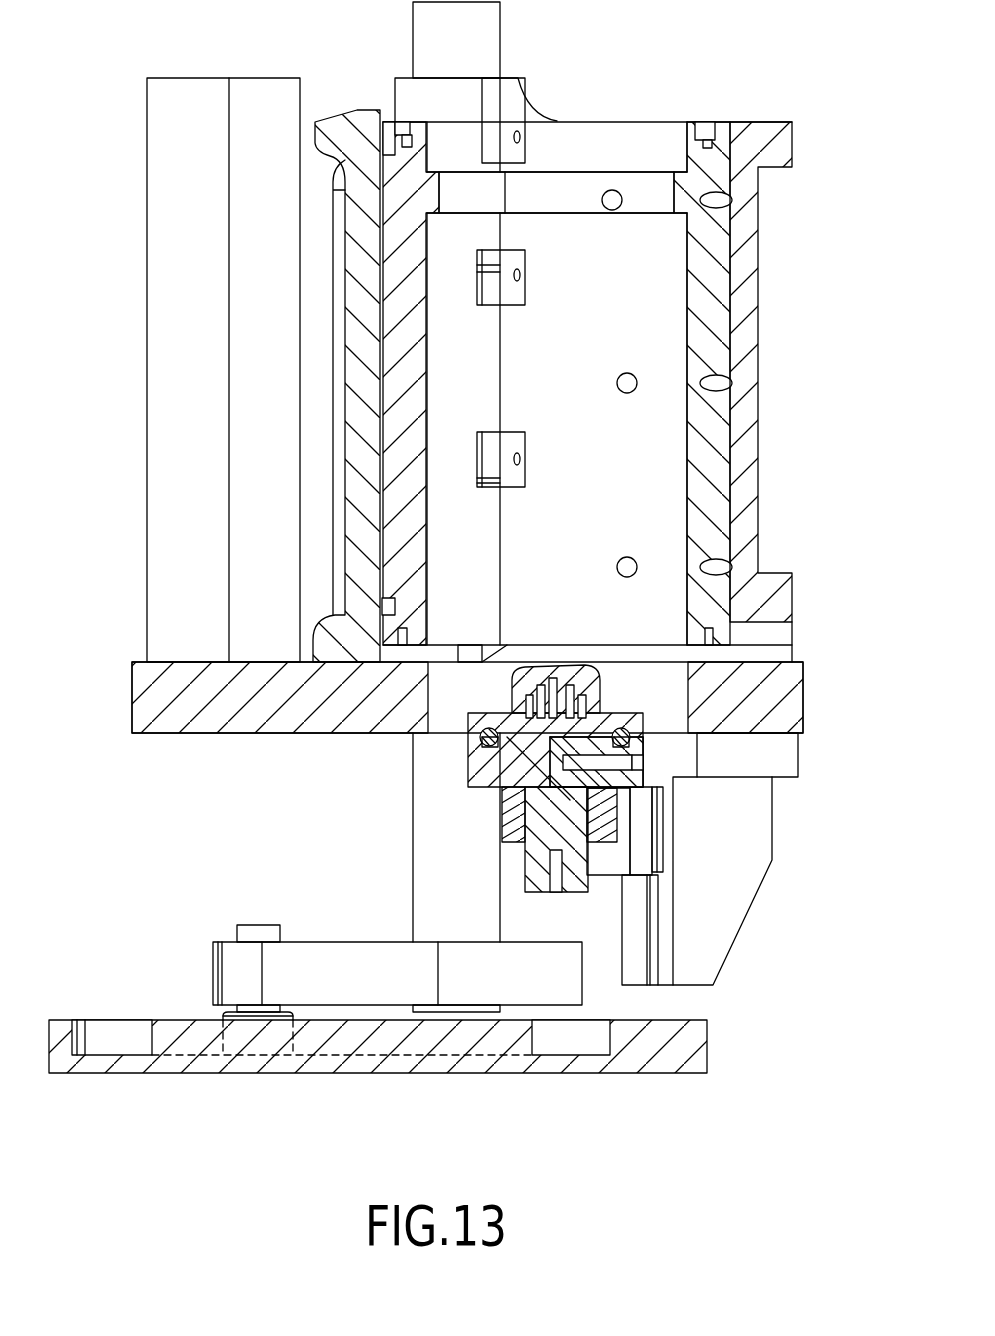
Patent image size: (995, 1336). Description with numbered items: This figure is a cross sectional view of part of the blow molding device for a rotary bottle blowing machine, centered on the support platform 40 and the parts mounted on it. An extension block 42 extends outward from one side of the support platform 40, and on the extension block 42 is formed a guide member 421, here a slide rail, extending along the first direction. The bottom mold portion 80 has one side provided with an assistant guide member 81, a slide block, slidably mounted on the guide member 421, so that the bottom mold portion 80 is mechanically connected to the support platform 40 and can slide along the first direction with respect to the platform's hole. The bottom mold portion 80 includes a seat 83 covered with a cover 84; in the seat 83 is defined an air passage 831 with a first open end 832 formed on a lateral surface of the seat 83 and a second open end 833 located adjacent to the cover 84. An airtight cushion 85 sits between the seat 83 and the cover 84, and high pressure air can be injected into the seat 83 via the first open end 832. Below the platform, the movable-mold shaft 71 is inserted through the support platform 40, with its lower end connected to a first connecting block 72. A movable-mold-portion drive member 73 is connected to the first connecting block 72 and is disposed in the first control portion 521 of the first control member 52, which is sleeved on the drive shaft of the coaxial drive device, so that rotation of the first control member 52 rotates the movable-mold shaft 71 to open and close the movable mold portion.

The support platform 40 is at (148, 734).
The extension block 42 is at (725, 905).
The guide member 421 is at (655, 962).
The first control member 52 is at (285, 1065).
The first control portion 521 is at (172, 1057).
The movable-mold shaft 71 is at (413, 880).
The first connecting block 72 is at (308, 950).
The movable-mold-portion drive member 73 is at (225, 1013).
The bottom mold portion 80 is at (507, 812).
The assistant guide member 81 is at (640, 832).
The seat 83 is at (475, 775).
The cover 84 is at (483, 722).
The airtight cushion 85 is at (475, 738).
The air passage 831 is at (603, 730).
The first open end 832 is at (638, 757).
The second open end 833 is at (565, 700).